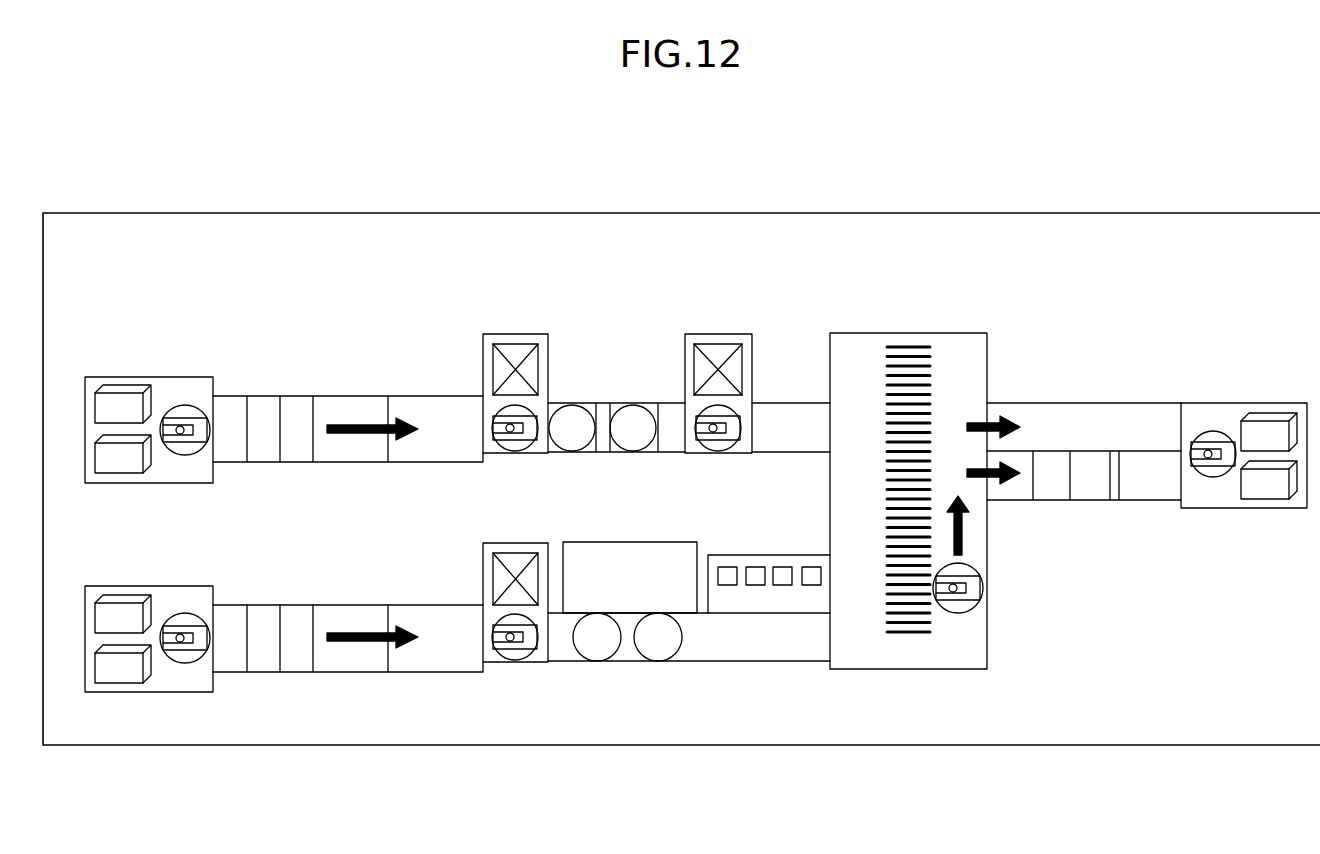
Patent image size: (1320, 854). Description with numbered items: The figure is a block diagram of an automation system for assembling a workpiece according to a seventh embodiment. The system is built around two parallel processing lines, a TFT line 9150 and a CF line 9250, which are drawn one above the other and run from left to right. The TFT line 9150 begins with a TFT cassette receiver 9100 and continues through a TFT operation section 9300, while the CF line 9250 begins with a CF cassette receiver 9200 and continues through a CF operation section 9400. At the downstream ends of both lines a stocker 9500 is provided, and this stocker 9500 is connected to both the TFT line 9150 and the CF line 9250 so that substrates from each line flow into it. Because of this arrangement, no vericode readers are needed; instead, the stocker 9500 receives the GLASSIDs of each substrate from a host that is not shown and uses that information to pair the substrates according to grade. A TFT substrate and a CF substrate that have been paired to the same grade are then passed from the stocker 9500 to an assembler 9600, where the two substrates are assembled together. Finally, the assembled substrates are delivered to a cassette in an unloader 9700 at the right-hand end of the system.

The TFT cassette receiver 9100 is at (148, 377).
The CF cassette receiver 9200 is at (148, 586).
The TFT line 9150 is at (420, 325).
The CF line 9250 is at (634, 720).
The TFT operation section 9300 is at (233, 463).
The CF operation section 9400 is at (233, 672).
The stocker 9500 is at (910, 333).
The assembler 9600 is at (1136, 403).
The unloader 9700 is at (1270, 403).